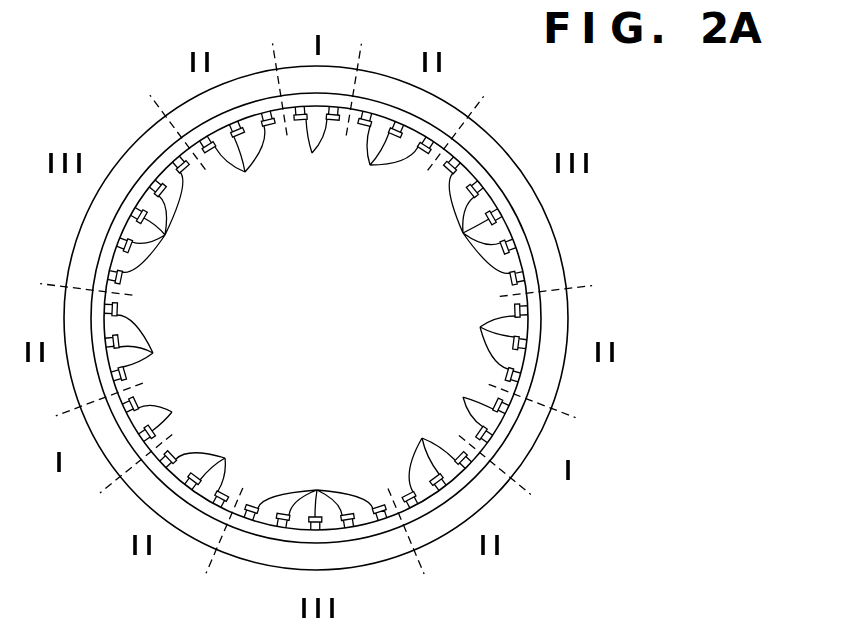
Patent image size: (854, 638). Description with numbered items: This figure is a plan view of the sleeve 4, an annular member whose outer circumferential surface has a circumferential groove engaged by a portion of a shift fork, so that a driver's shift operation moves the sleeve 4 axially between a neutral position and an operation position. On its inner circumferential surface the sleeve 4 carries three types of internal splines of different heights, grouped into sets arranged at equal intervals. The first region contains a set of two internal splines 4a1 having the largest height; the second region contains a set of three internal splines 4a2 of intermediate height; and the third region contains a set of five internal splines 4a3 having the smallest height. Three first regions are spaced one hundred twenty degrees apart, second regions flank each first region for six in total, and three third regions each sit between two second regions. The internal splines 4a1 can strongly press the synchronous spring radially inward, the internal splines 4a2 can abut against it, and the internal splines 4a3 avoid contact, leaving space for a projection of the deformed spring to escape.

The sleeve 4 is at (137, 59).
The internal spline 4a1 is at (315, 275).
The internal spline 4a2 is at (316, 309).
The internal spline 4a3 is at (316, 344).